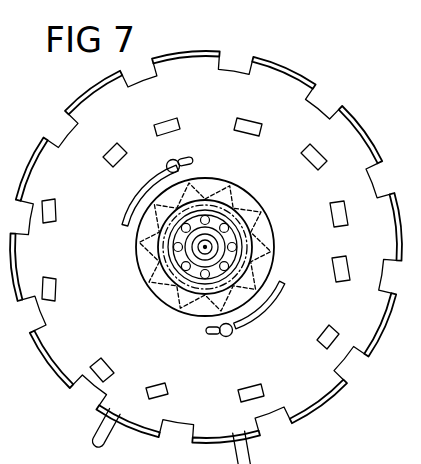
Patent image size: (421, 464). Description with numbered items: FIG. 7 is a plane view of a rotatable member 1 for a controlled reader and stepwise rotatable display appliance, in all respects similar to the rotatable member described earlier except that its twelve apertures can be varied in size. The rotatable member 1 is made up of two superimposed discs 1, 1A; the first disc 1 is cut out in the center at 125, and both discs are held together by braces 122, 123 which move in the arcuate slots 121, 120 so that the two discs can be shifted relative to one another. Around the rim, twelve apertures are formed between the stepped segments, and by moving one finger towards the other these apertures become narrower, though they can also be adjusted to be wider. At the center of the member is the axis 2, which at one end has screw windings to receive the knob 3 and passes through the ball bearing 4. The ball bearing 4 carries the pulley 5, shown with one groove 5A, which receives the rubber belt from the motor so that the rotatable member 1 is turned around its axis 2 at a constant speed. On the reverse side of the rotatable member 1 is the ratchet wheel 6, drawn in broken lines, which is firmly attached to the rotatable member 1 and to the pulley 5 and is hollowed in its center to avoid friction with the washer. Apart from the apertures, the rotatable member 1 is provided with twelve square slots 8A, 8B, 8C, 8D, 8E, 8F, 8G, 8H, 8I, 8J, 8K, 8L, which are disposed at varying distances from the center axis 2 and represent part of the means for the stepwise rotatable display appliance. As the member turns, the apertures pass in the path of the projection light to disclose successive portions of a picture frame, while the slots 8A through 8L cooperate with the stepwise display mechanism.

The rotatable member 1 is at (209, 257).
The disc 1A is at (378, 150).
The axis 2 is at (210, 243).
The knob 3 is at (238, 234).
The ball bearing 4 is at (253, 240).
The pulley 5 is at (250, 253).
The groove 5A is at (172, 266).
The ratchet wheel 6 is at (146, 247).
The square slot 8A is at (112, 152).
The square slot 8B is at (180, 123).
The square slot 8C is at (252, 122).
The square slot 8D is at (316, 143).
The square slot 8E is at (334, 222).
The square slot 8F is at (334, 268).
The square slot 8G is at (326, 333).
The square slot 8H is at (260, 386).
The square slot 8I is at (170, 376).
The square slot 8J is at (118, 360).
The square slot 8K is at (54, 300).
The square slot 8L is at (54, 206).
The slot 120 is at (280, 284).
The slot 121 is at (125, 226).
The brace 122 is at (172, 147).
The brace 123 is at (236, 334).
The center cut-out 125 is at (228, 181).